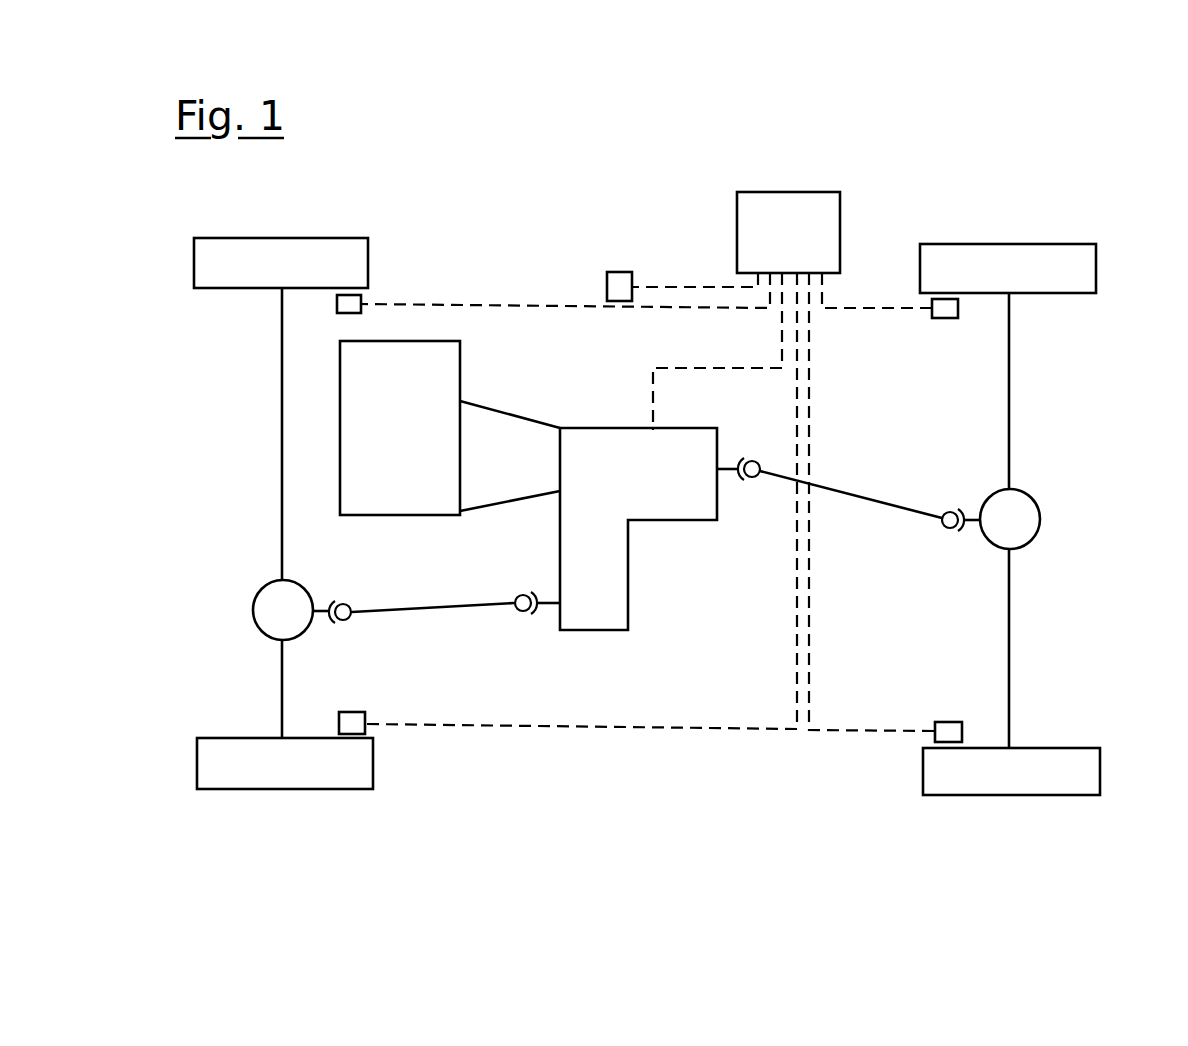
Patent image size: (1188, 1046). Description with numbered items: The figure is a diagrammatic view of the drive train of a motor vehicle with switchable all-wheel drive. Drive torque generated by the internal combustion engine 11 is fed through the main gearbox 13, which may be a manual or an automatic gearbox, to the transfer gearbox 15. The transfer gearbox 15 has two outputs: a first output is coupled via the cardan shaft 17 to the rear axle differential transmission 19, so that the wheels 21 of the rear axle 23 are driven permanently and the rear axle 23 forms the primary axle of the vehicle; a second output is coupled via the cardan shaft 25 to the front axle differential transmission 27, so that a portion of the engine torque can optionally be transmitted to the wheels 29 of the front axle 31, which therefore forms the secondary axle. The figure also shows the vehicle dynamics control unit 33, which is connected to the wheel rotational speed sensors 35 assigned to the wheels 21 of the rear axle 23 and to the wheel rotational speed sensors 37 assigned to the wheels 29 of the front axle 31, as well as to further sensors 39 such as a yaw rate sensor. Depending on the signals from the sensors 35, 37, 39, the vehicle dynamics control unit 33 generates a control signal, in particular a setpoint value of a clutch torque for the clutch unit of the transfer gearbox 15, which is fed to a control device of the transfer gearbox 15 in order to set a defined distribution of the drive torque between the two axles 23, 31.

The internal combustion engine 11 is at (386, 443).
The main gearbox 13 is at (489, 475).
The transfer gearbox 15 is at (622, 492).
The cardan shaft 17 is at (853, 492).
The rear axle differential transmission 19 is at (1040, 510).
The wheels 21 is at (1065, 243).
The rear axle 23 is at (1066, 412).
The cardan shaft 25 is at (433, 611).
The front axle differential transmission 27 is at (253, 603).
The wheels 29 is at (218, 237).
The front axle 31 is at (250, 478).
The vehicle dynamics control unit 33 is at (774, 249).
The wheel rotational speed sensors 35 is at (945, 320).
The wheel rotational speed sensors 37 is at (335, 305).
The further sensors 39 is at (615, 270).